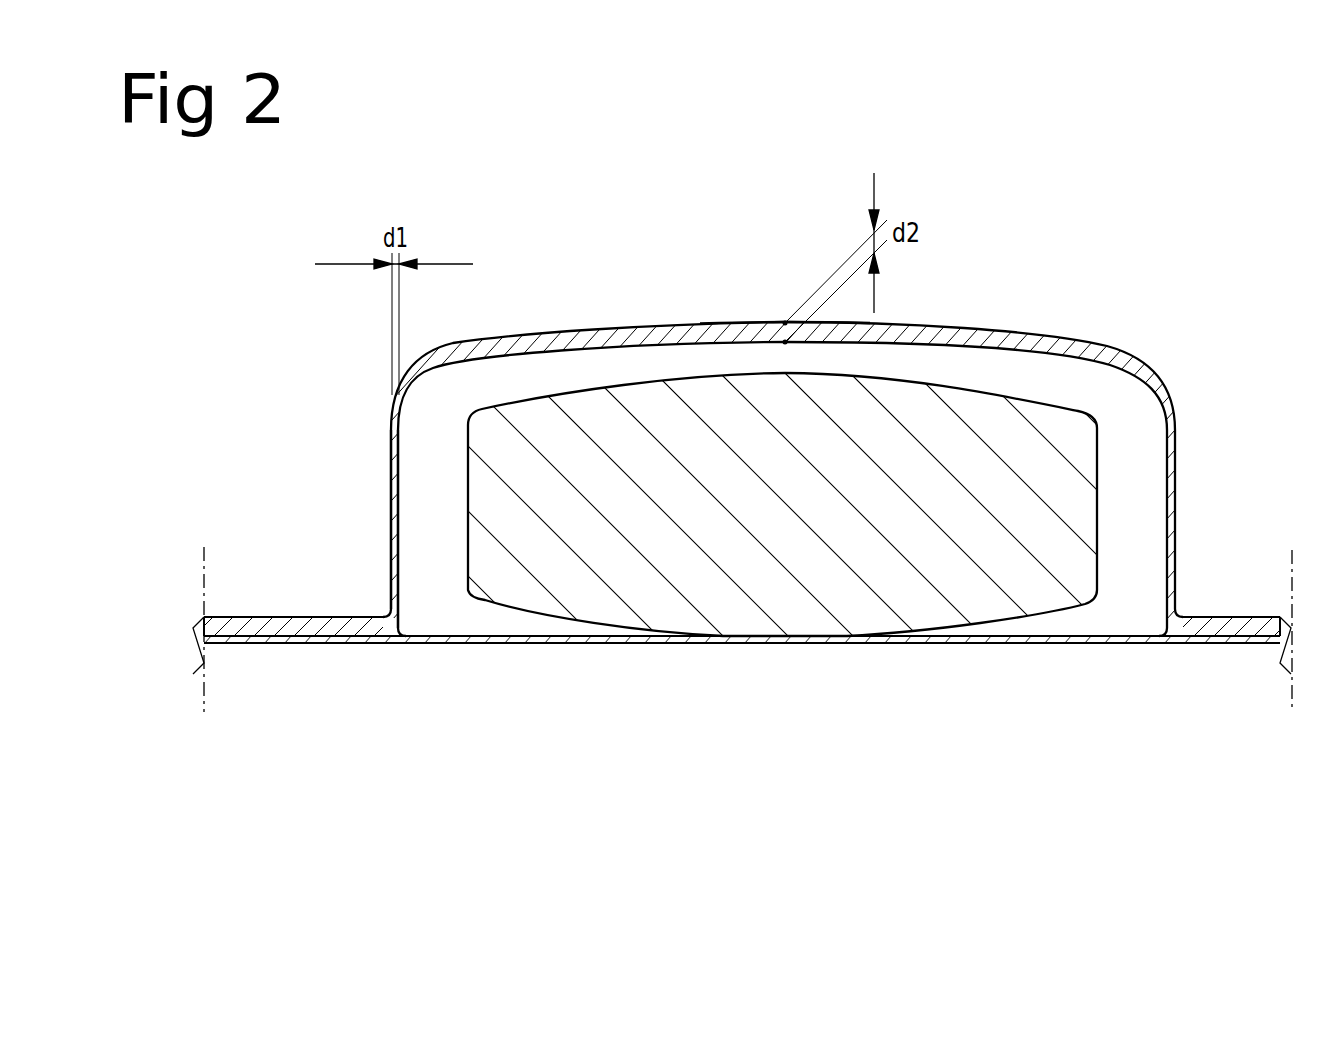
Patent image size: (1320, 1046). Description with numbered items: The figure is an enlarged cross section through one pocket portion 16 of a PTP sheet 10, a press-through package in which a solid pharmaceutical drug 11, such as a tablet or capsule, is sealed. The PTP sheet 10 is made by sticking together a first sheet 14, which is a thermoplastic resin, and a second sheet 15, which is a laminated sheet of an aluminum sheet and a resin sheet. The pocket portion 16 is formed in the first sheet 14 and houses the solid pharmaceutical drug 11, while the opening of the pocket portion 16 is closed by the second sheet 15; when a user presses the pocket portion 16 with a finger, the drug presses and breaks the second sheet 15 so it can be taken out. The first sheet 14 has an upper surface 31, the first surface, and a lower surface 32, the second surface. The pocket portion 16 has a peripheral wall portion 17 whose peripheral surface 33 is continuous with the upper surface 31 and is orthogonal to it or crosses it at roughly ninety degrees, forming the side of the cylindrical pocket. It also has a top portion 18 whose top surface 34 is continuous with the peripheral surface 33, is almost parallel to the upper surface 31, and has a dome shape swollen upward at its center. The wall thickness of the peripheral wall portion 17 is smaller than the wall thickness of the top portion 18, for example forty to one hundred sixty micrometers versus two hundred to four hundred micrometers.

The PTP sheet 10 is at (540, 716).
The solid pharmaceutical drug 11 is at (785, 637).
The first sheet 14 is at (276, 616).
The second sheet 15 is at (277, 645).
The pocket portion 16 is at (1168, 349).
The peripheral wall portion 17 is at (391, 460).
The top portion 18 is at (733, 333).
The upper surface 31 is at (323, 616).
The lower surface 32 is at (340, 644).
The peripheral surface 33 is at (391, 501).
The top surface 34 is at (667, 322).